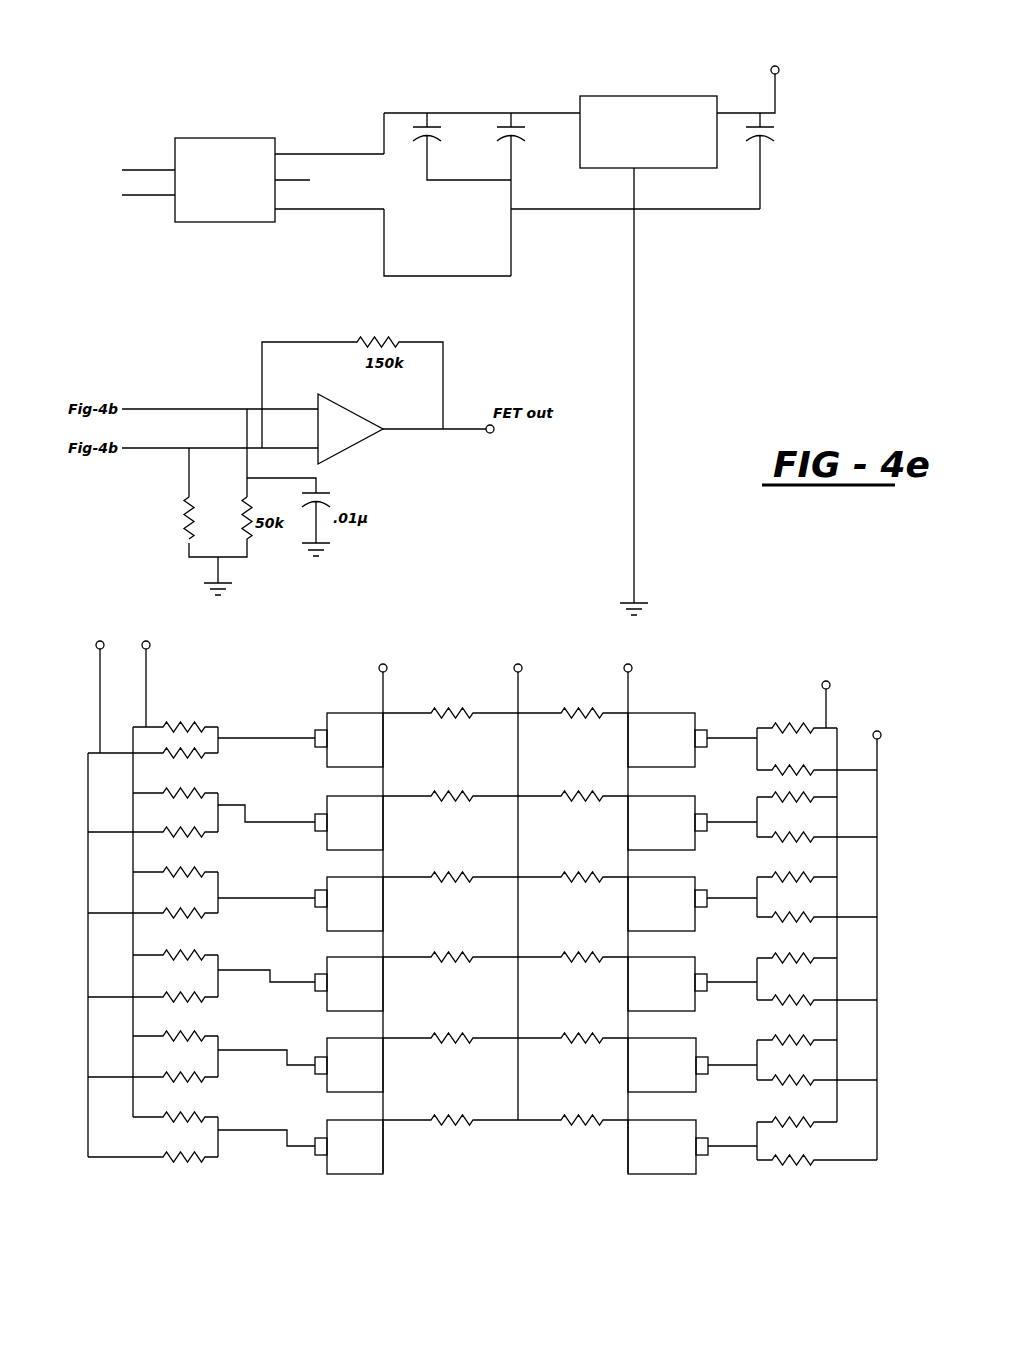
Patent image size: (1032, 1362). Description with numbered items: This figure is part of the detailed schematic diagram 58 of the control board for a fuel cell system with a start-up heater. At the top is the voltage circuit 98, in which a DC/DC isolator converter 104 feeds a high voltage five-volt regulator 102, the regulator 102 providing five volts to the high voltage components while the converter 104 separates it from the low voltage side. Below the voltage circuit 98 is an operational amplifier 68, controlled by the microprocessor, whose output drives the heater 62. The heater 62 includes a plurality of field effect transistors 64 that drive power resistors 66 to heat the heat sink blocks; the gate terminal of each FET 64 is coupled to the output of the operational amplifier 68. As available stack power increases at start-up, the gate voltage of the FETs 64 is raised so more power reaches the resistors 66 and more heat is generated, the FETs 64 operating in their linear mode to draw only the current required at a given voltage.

The detailed schematic diagram 58 is at (372, 66).
The voltage circuit 98 is at (483, 76).
The high voltage 5-volt regulator 102 is at (657, 80).
The DC/DC isolator converter 104 is at (224, 138).
The operational amplifier 68 is at (353, 445).
The heater 62 is at (490, 914).
The field effect transistor 64 is at (708, 1158).
The power resistor 66 is at (800, 1163).